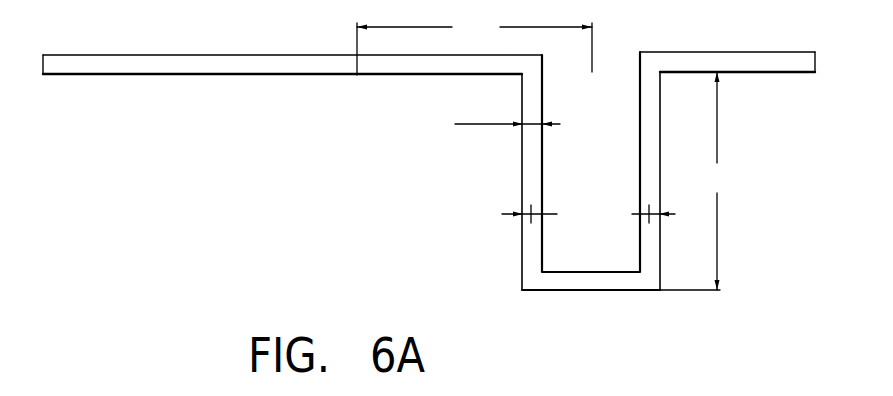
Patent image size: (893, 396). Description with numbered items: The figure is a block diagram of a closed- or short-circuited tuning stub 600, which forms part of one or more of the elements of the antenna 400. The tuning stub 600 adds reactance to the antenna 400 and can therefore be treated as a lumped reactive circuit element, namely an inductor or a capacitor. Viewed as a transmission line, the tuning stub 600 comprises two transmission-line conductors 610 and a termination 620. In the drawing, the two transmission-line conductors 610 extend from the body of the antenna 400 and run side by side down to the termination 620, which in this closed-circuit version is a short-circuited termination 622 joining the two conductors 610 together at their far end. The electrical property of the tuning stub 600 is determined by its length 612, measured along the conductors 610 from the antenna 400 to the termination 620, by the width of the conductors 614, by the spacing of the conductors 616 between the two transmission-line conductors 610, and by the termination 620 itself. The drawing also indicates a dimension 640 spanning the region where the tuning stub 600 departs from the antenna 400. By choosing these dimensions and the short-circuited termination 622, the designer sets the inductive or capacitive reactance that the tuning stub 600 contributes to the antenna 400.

The antenna 400 is at (159, 74).
The closed-circuited tuning stub 600 is at (522, 242).
The transmission-line conductors 610 is at (650, 190).
The length 612 is at (701, 181).
The width of the conductors 614 is at (507, 112).
The spacing of the conductors 616 is at (588, 215).
The termination 620 is at (559, 283).
The short-circuited termination 622 is at (624, 283).
The trench width 640 is at (474, 45).